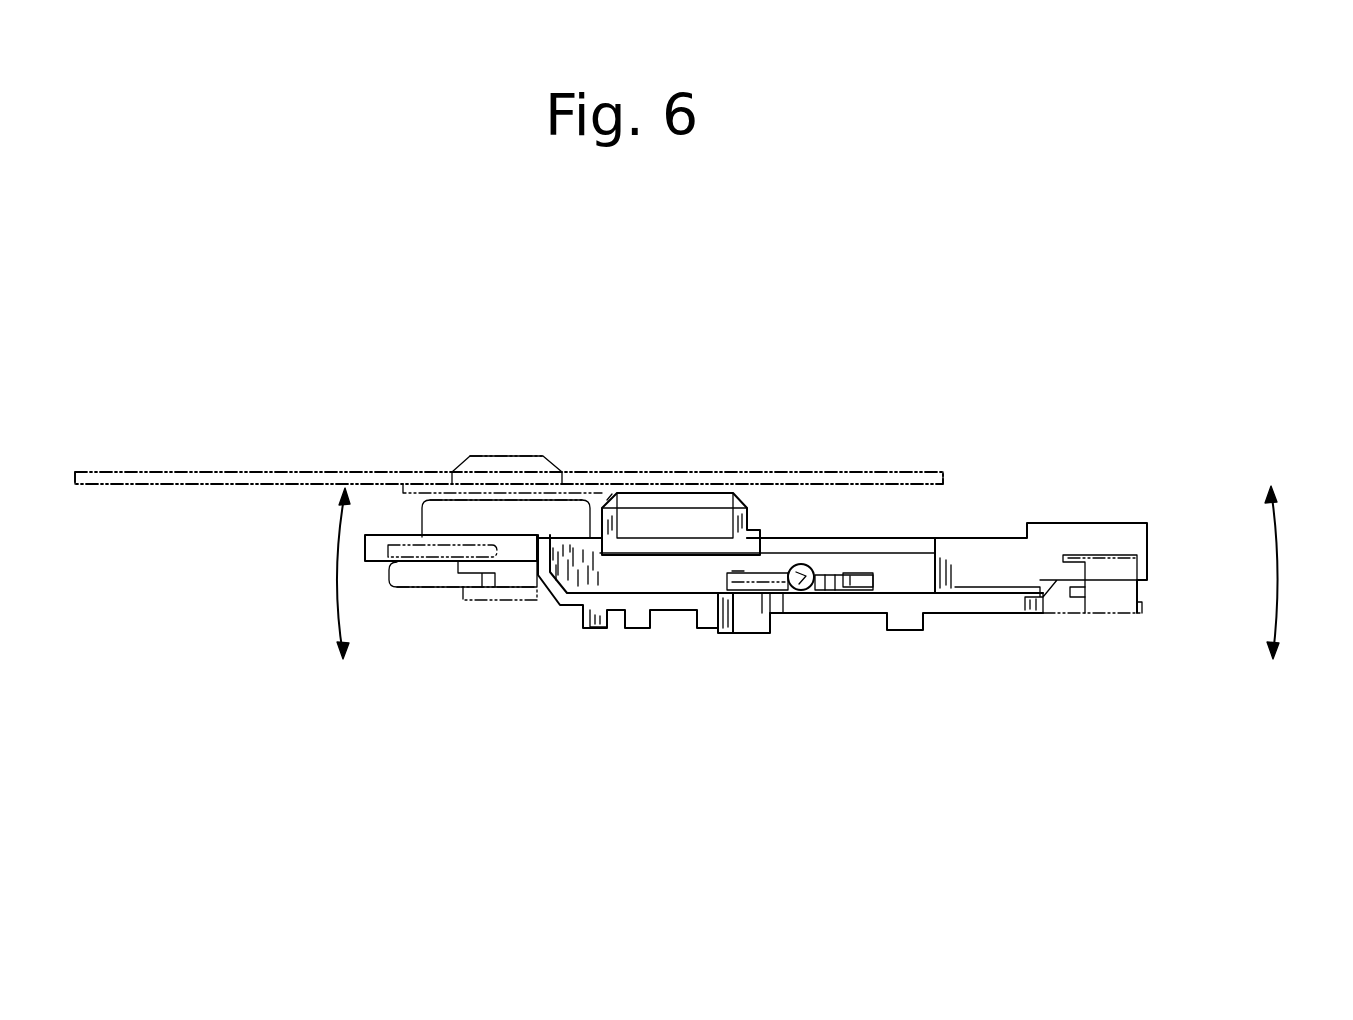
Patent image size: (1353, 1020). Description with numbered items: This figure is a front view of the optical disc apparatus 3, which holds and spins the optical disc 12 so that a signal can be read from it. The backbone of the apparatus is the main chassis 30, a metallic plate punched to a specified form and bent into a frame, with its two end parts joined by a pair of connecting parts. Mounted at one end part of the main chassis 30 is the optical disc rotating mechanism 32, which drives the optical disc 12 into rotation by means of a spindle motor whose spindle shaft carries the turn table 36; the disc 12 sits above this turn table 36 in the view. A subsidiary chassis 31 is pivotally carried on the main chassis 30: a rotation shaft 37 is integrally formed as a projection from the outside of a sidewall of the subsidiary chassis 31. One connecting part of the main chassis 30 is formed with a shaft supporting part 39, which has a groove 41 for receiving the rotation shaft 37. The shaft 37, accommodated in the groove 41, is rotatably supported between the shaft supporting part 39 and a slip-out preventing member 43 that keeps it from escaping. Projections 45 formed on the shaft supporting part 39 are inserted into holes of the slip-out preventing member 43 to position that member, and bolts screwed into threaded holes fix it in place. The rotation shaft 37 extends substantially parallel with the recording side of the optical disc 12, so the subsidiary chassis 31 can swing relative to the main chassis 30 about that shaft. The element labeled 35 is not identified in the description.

The optical disc apparatus 3 is at (1162, 400).
The optical disc 12 is at (112, 486).
The main chassis 30 is at (469, 598).
The subsidiary chassis 31 is at (1102, 519).
The optical disc rotating mechanism 32 is at (448, 466).
The support block 35 is at (563, 497).
The turn table 36 is at (522, 484).
The rotation shaft 37 is at (803, 566).
The shaft supporting part 39 is at (851, 597).
The groove 41 is at (790, 597).
The slip-out preventing member 43 is at (835, 545).
The projections 45 is at (728, 545).